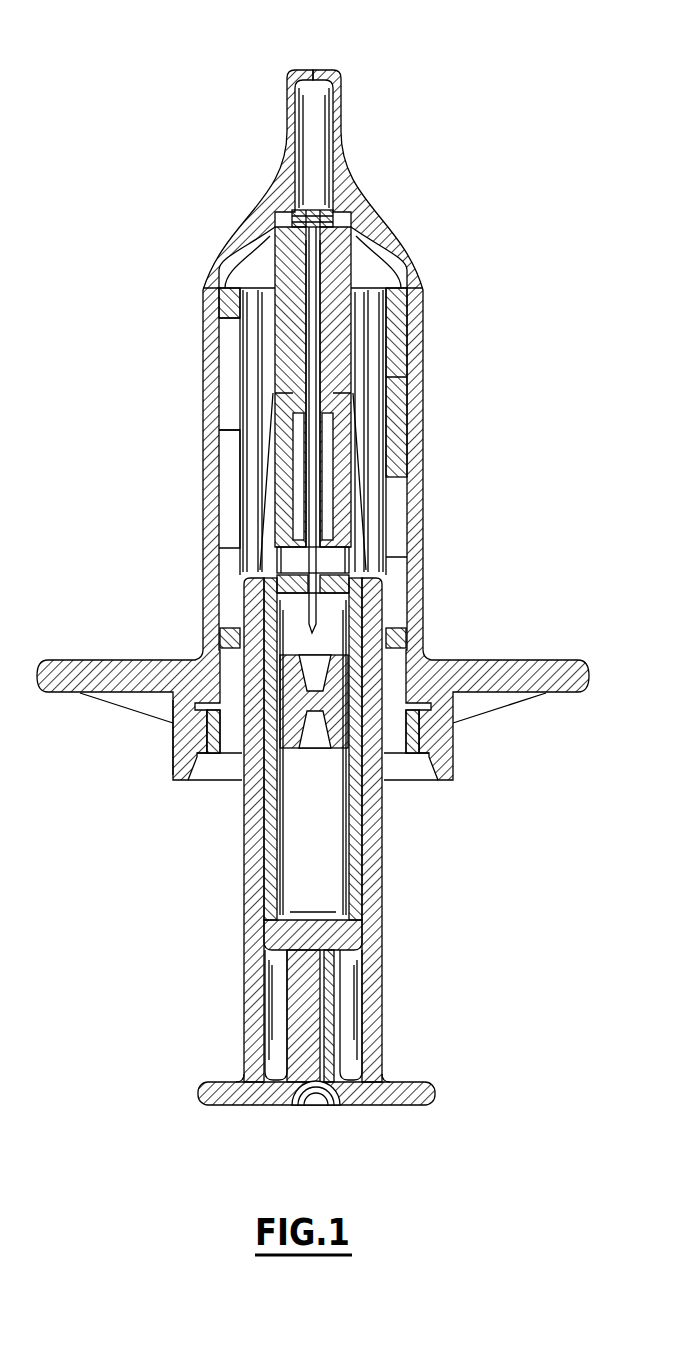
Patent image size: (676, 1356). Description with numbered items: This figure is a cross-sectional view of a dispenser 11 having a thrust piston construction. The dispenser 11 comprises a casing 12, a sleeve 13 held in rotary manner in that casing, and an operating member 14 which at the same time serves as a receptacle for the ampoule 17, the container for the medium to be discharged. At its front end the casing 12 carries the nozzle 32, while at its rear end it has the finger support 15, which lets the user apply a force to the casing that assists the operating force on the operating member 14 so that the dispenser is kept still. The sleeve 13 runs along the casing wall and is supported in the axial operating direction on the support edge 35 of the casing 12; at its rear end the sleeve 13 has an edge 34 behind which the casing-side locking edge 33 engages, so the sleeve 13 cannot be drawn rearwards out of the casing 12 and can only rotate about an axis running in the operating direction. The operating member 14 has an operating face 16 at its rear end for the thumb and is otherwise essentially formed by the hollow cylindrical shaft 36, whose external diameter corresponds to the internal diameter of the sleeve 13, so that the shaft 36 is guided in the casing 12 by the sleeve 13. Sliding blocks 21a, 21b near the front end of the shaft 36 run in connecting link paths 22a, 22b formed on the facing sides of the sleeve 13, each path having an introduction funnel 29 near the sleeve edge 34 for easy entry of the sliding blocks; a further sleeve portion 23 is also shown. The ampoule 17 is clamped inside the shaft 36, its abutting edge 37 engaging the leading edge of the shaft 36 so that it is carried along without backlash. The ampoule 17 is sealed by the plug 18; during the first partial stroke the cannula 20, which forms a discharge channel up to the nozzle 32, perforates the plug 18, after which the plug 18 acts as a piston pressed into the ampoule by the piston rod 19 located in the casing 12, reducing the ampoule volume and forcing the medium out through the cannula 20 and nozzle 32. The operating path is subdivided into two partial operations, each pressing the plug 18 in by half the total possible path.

The dispenser 11 is at (493, 298).
The casing 12 is at (417, 354).
The sleeve 13 is at (400, 422).
The operating member 14 is at (403, 992).
The finger support 15 is at (527, 668).
The operating face 16 is at (387, 1107).
The ampoule 17 is at (362, 827).
The plug 18 is at (337, 753).
The piston rod 19 is at (343, 497).
The cannula 20 is at (317, 560).
The sliding block 21a is at (222, 638).
The sliding block 21b is at (410, 640).
The connecting link path 22a is at (230, 358).
The connecting link path 22b is at (400, 318).
The sleeve lower section 23 is at (230, 462).
The introduction funnel 29 is at (398, 728).
The nozzle 32 is at (318, 60).
The locking edge 33 is at (187, 773).
The edge 34 is at (173, 740).
The support edge 35 is at (222, 302).
The hollow cylindrical shaft 36 is at (373, 898).
The abutting edge 37 is at (250, 615).